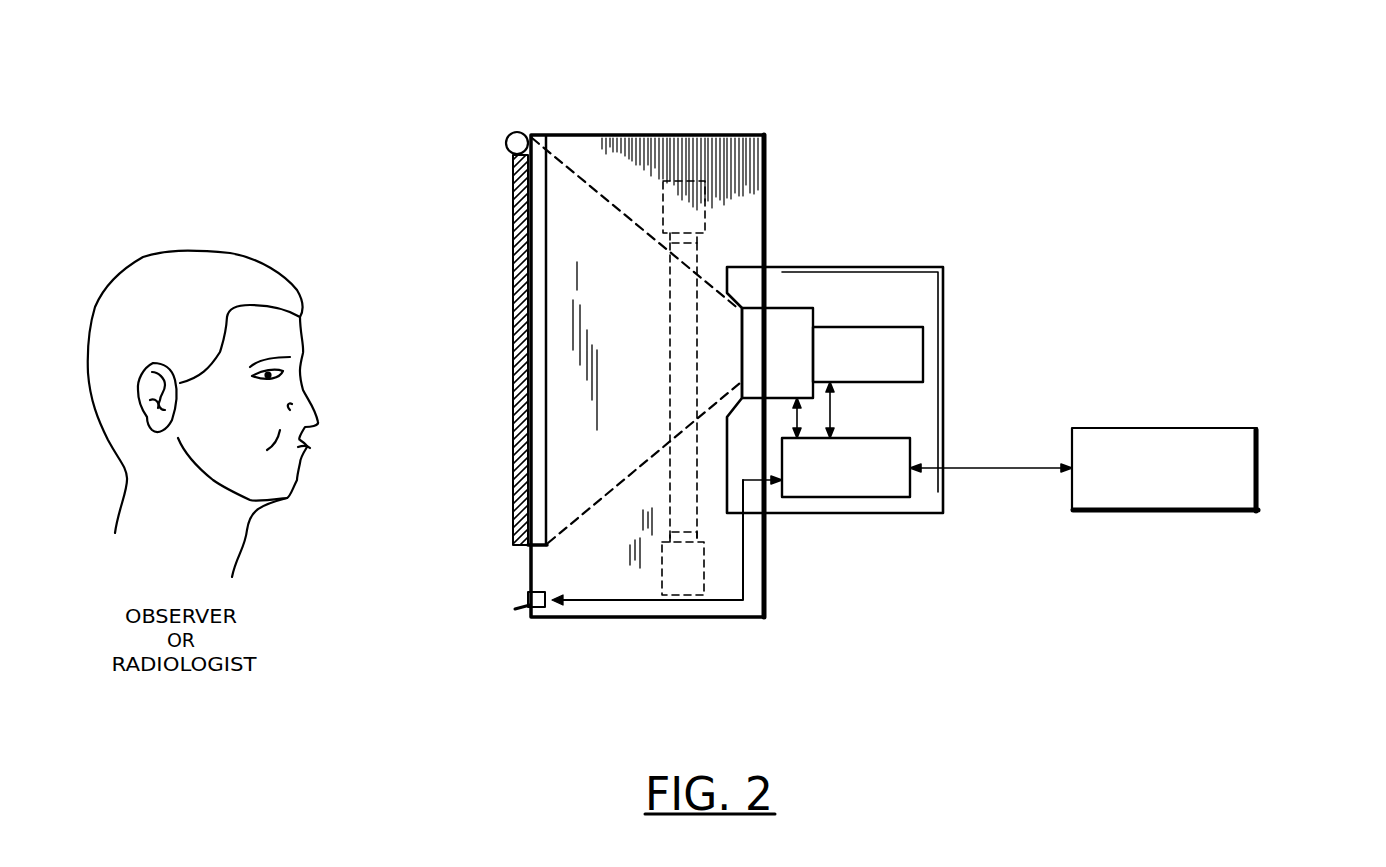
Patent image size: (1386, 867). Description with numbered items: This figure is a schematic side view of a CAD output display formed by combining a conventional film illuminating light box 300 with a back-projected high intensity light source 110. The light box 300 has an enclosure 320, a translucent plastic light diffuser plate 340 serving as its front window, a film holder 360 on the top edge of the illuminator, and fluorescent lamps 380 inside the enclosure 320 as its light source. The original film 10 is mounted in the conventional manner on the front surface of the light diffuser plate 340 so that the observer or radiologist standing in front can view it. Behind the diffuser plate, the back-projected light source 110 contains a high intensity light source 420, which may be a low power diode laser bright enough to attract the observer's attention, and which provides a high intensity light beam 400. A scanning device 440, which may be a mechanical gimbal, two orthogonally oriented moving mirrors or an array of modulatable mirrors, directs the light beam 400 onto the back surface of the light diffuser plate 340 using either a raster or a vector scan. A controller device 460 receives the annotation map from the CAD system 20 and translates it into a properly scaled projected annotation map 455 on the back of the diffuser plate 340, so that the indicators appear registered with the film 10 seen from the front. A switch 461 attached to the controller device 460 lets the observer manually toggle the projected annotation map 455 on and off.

The original film 10 is at (510, 218).
The CAD system 20 is at (1256, 433).
The back-projected high intensity light source 110 is at (1049, 390).
The film illuminating light box 300 is at (742, 211).
The enclosure 320 is at (766, 168).
The light diffuser plate 340 is at (536, 127).
The film holder 360 is at (505, 128).
The fluorescent lamps 380 is at (663, 243).
The high intensity light beam 400 is at (568, 530).
The high intensity light source 420 is at (868, 354).
The scanning device 440 is at (777, 353).
The projected annotation map 455 is at (545, 325).
The controller device 460 is at (846, 467).
The switch 461 is at (537, 609).